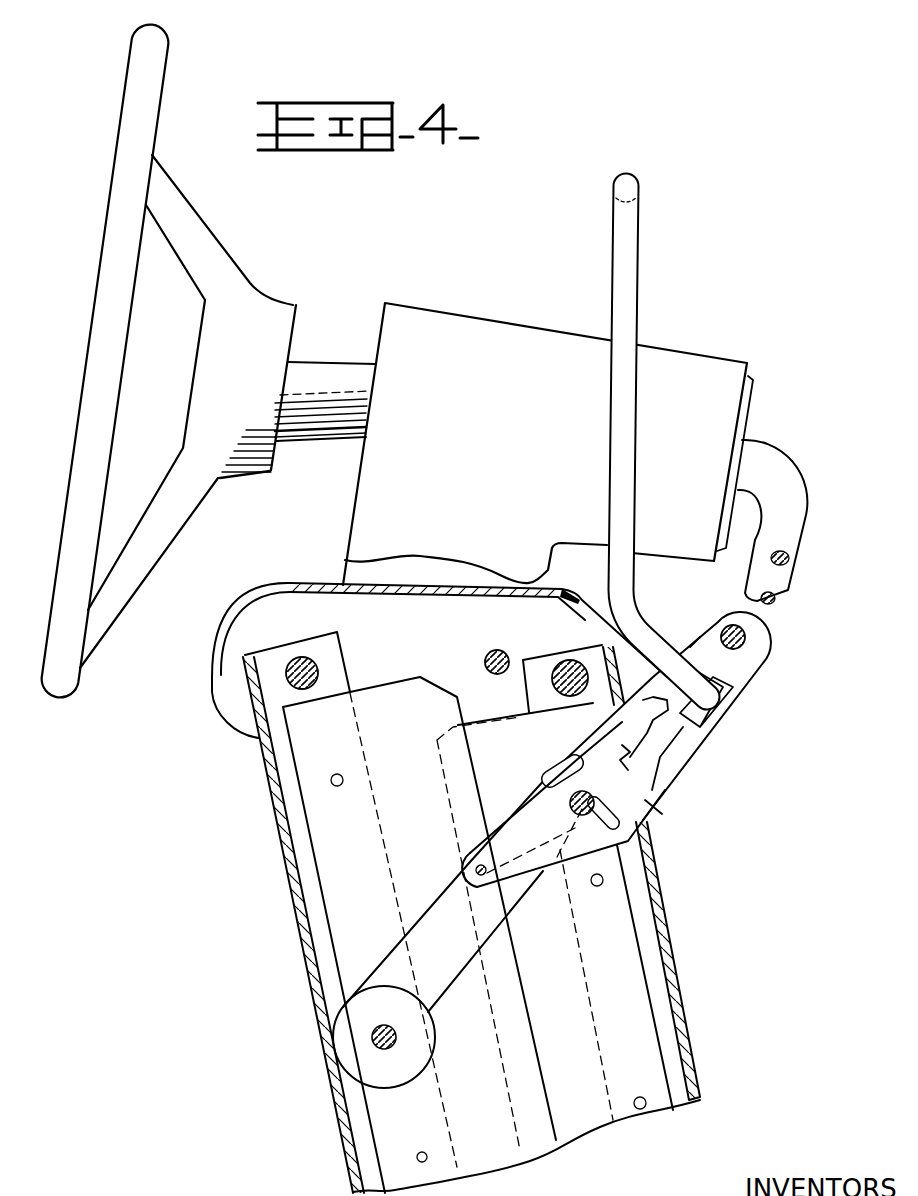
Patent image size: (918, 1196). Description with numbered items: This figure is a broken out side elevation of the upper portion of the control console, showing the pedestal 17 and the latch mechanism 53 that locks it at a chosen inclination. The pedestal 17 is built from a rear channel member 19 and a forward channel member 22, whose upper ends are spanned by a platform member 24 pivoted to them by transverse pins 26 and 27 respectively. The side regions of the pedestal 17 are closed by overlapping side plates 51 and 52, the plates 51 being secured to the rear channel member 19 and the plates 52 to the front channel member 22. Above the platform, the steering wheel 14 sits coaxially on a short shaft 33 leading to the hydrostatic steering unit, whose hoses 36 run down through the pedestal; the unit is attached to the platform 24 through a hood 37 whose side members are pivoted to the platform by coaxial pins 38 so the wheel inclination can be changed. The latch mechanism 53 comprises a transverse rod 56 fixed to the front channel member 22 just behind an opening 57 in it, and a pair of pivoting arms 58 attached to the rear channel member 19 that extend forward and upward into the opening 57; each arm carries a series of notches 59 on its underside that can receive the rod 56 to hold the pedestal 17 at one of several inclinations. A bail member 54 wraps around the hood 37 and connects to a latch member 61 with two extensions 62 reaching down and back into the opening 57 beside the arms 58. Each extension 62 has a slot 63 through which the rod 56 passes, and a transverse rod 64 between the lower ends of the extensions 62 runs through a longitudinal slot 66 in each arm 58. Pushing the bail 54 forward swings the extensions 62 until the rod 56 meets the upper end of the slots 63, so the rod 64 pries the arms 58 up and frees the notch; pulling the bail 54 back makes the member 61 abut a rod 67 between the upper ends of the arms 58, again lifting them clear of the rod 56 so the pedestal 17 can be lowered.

The steering wheel 14 is at (130, 103).
The pedestal 17 is at (694, 977).
The rear channel member 19 is at (360, 1145).
The forward channel member 22 is at (680, 1073).
The platform member 24 is at (372, 634).
The transverse pin 26 is at (302, 658).
The transverse pin 27 is at (570, 661).
The short shaft 33 is at (337, 368).
The hoses 36 is at (758, 458).
The hood 37 is at (461, 509).
The coaxial pins 38 is at (498, 651).
The side plates 51 is at (483, 1153).
The side plates 52 is at (580, 1120).
The latch mechanism 53 is at (712, 758).
The bail member 54 is at (636, 245).
The transverse rod 56 is at (576, 811).
The opening 57 is at (650, 840).
The pivoting arms 58 is at (463, 960).
The notches 59 is at (618, 752).
The latch member 61 is at (753, 663).
The extensions 62 is at (652, 790).
The slot 63 is at (652, 815).
The transverse rod 64 is at (475, 870).
The longitudinal slot 66 is at (545, 776).
The rod 67 is at (733, 625).